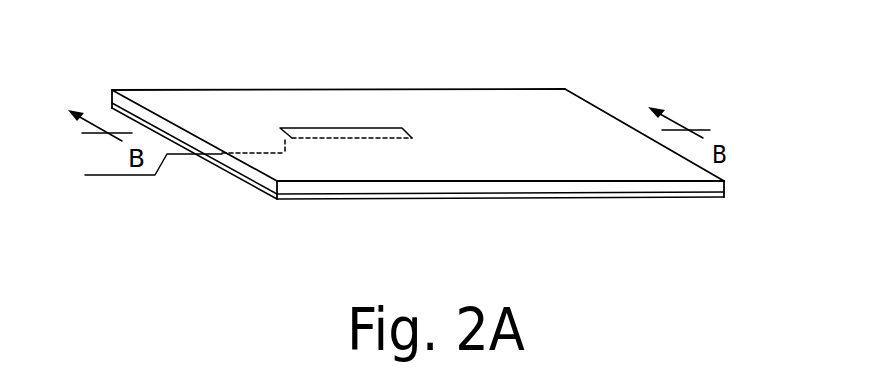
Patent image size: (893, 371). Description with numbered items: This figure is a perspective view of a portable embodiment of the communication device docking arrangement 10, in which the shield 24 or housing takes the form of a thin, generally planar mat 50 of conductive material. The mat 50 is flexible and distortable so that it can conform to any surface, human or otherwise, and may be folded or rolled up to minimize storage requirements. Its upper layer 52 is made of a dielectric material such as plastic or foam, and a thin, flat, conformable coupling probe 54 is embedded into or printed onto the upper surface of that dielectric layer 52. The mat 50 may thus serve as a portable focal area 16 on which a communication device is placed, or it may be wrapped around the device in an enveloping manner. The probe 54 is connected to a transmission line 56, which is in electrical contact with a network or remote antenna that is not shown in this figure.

The portable communication device docking arrangement 10 is at (487, 64).
The focal area 16 is at (325, 97).
The shield 24 is at (587, 200).
The mat 50 is at (581, 99).
The upper layer 52 is at (668, 175).
The coupling probe 54 is at (355, 128).
The transmission line 56 is at (115, 178).